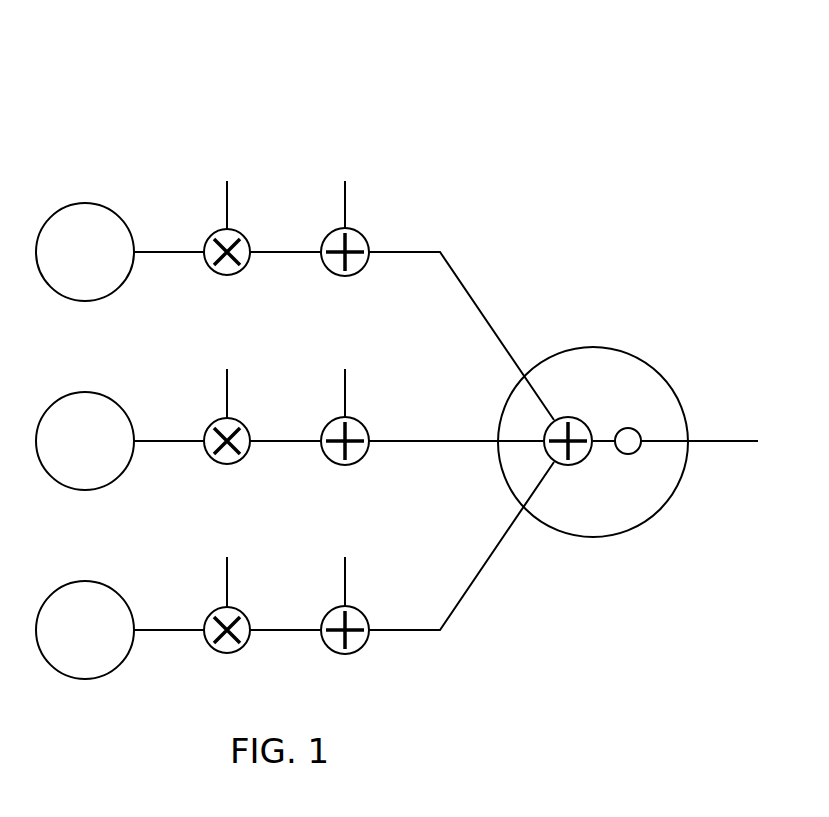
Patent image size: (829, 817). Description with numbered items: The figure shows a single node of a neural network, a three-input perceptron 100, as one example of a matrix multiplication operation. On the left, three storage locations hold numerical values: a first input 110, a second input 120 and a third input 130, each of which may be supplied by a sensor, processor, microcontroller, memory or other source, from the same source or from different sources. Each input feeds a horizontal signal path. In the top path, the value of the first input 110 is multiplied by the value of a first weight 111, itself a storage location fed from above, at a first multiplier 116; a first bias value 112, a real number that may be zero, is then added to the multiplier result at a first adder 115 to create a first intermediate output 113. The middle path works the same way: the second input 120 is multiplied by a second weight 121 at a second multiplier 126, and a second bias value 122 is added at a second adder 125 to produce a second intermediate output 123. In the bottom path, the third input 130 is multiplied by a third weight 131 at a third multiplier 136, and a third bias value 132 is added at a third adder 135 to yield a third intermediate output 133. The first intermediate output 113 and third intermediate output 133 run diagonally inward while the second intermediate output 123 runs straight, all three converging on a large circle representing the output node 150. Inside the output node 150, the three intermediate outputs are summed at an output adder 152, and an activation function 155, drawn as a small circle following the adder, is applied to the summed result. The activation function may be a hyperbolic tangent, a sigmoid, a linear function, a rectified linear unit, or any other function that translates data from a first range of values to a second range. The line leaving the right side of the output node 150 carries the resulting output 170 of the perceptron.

The perceptron 100 is at (150, 76).
The first input 110 is at (88, 205).
The first weight 111 is at (225, 200).
The first bias value 112 is at (346, 205).
The first intermediate output 113 is at (493, 323).
The first adder 115 is at (355, 276).
The first multiplier 116 is at (218, 275).
The second input 120 is at (88, 393).
The second weight 121 is at (225, 390).
The second bias value 122 is at (346, 393).
The second intermediate output 123 is at (445, 440).
The second adder 125 is at (355, 465).
The second multiplier 126 is at (218, 464).
The third input 130 is at (83, 678).
The third weight 131 is at (225, 583).
The third bias value 132 is at (346, 583).
The third intermediate output 133 is at (491, 556).
The third adder 135 is at (355, 655).
The third multiplier 136 is at (218, 653).
The output node 150 is at (595, 346).
The output adder 152 is at (581, 419).
The activation function 155 is at (628, 455).
The output 170 is at (725, 440).